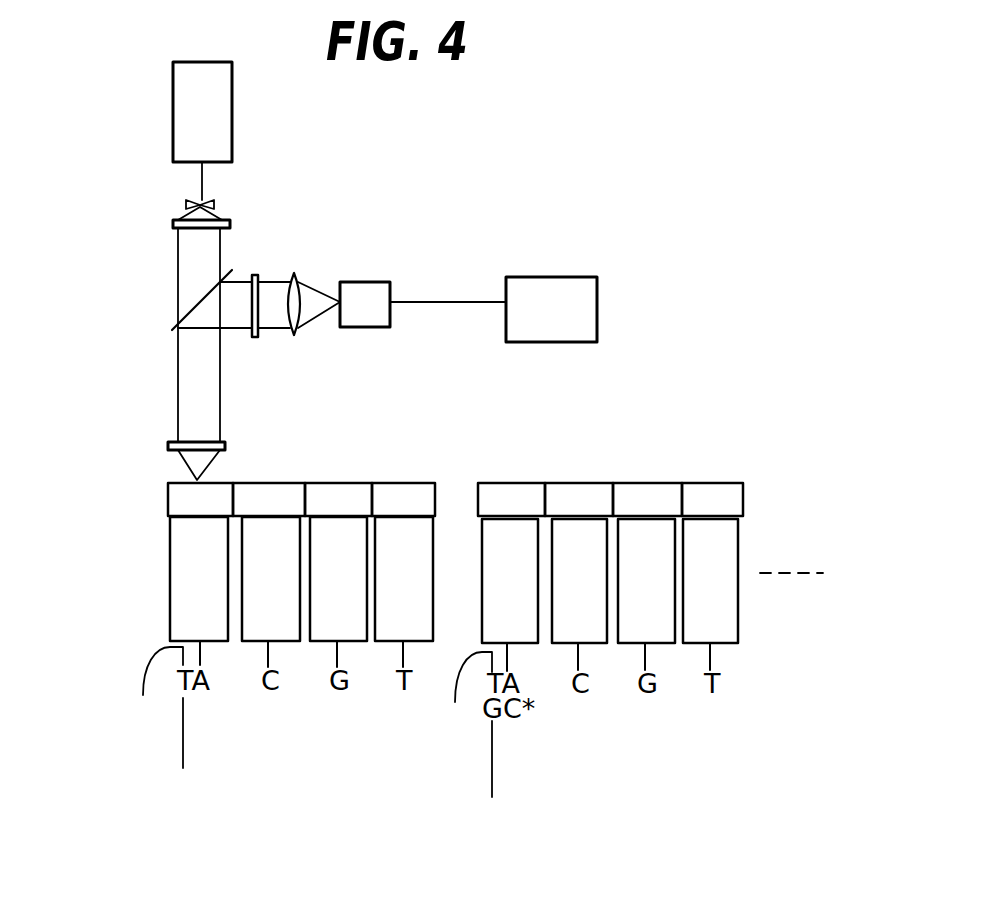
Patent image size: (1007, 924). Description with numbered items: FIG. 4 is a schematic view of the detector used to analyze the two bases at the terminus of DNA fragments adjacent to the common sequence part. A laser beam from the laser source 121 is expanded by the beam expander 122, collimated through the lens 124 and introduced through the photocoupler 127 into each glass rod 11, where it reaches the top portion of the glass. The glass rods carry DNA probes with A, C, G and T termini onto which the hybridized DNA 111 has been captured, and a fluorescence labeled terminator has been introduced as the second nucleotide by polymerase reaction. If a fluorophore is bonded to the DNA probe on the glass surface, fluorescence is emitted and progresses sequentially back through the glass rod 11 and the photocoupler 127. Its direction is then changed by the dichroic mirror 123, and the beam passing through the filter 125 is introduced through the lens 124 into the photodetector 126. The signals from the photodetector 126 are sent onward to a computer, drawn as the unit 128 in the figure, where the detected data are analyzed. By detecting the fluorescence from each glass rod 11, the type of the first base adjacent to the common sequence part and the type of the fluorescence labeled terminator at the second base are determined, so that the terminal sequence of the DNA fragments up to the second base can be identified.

The glass rod 11 is at (255, 583).
The hybridized DNA 111 is at (183, 757).
The laser source 121 is at (223, 102).
The beam expander 122 is at (243, 192).
The dichroic mirror 123 is at (192, 308).
The lens 124 is at (295, 275).
The filter 125 is at (255, 337).
The photodetector 126 is at (358, 318).
The photocoupler 127 is at (506, 495).
The signal processor 128 is at (557, 287).